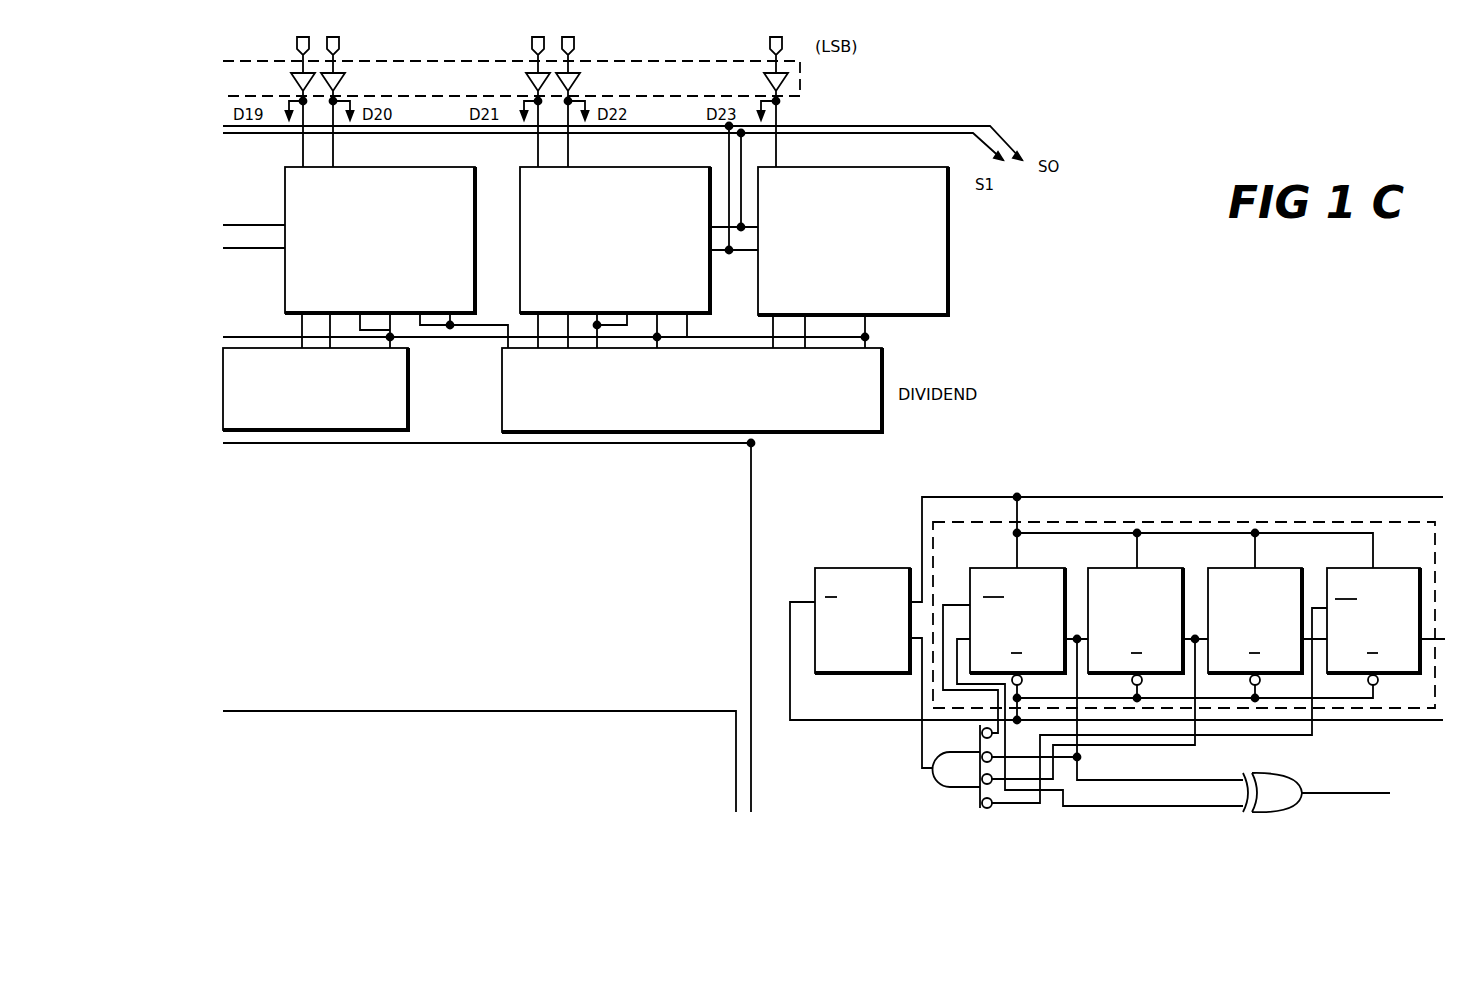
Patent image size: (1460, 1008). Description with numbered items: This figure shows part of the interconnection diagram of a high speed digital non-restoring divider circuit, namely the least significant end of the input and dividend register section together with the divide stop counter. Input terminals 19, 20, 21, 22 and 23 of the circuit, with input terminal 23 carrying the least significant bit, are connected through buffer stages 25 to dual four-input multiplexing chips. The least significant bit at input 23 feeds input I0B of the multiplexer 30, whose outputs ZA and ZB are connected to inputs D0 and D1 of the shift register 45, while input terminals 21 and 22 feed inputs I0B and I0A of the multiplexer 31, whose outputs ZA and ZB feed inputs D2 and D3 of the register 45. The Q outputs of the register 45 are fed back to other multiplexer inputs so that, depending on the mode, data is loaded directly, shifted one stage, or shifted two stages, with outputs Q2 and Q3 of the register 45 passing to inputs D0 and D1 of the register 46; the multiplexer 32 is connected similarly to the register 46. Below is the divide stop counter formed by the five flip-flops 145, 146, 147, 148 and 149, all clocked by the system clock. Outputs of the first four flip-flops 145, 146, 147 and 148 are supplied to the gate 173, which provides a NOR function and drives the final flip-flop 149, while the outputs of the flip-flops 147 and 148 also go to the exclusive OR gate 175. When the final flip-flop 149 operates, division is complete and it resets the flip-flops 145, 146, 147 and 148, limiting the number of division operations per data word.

The input terminal 19 is at (286, 100).
The input terminal 20 is at (348, 100).
The input terminal 21 is at (521, 100).
The input terminal 22 is at (583, 100).
The input terminal 23 is at (759, 100).
The buffer stages 25 is at (845, 72).
The multiplexer 30 is at (924, 167).
The multiplexer 31 is at (682, 167).
The multiplexer 32 is at (445, 167).
The shift register 45 is at (882, 432).
The shift register 46 is at (408, 412).
The flip-flop 145 is at (1313, 582).
The flip-flop 146 is at (1195, 582).
The flip-flop 147 is at (1077, 582).
The flip-flop 148 is at (960, 578).
The final flip-flop 149 is at (857, 555).
The gate 173 is at (933, 792).
The exclusive OR gate 175 is at (1290, 786).